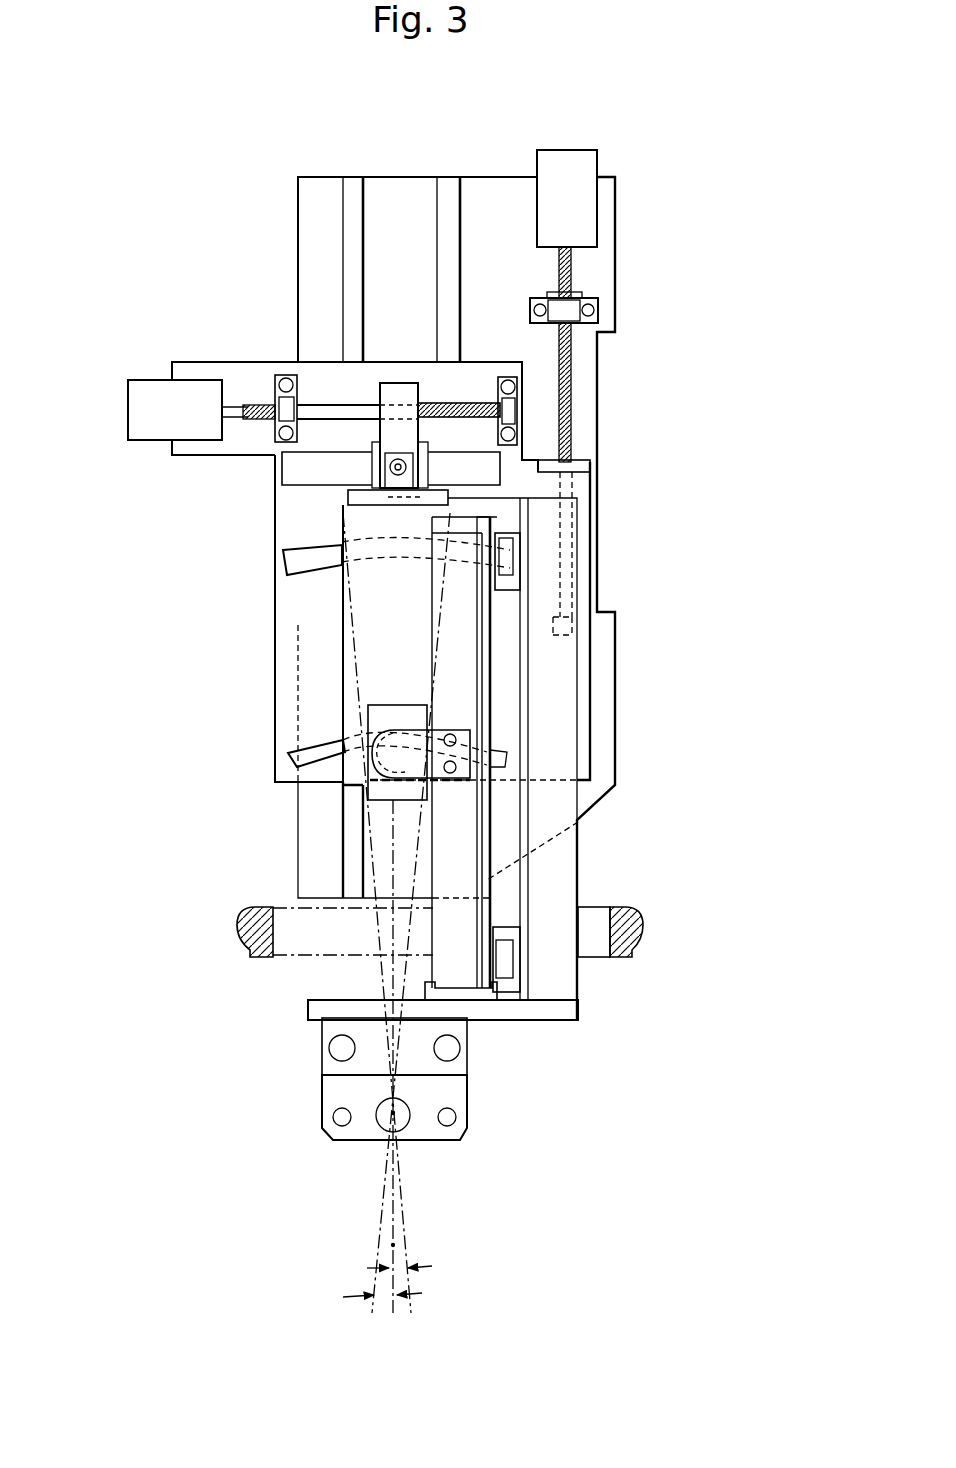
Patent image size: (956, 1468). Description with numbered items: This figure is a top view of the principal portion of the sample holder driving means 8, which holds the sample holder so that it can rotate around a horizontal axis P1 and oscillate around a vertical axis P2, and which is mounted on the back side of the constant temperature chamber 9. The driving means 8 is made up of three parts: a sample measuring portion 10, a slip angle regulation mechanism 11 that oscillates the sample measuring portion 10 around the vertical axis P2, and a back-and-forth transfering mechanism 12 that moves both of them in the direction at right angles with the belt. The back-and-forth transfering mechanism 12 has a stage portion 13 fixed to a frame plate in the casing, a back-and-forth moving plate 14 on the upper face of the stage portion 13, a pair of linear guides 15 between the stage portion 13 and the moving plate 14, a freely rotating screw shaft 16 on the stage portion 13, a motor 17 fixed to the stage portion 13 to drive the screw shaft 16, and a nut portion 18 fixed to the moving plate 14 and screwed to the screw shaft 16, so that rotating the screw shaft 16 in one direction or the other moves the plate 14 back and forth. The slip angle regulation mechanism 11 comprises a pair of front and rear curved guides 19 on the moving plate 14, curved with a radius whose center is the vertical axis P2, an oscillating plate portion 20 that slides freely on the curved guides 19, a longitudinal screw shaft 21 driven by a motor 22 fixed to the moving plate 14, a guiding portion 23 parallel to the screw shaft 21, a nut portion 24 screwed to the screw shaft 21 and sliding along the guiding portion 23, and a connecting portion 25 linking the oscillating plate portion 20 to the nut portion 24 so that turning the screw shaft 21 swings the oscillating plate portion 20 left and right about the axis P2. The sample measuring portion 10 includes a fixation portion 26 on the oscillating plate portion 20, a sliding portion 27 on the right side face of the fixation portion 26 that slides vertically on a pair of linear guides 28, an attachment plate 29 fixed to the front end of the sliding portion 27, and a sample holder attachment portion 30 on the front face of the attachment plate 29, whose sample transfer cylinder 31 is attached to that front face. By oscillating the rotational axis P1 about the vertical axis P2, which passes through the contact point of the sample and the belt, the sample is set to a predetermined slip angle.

The sample holder driving means 8 is at (170, 879).
The constant temperature chamber 9 is at (637, 903).
The sample measuring portion 10 is at (561, 1136).
The slip angle regulation mechanism 11 is at (319, 380).
The back-and-forth transfering mechanism 12 is at (634, 212).
The stage portion 13 is at (494, 180).
The back-and-forth moving plate 14 is at (369, 358).
The linear guides 15 is at (444, 174).
The screw shaft 16 is at (576, 412).
The motor 17 is at (568, 147).
The nut portion 18 is at (584, 488).
The curved guides 19 is at (285, 563).
The oscillating plate portion 20 is at (340, 630).
The screw shaft 21 is at (466, 397).
The motor 22 is at (153, 378).
The guiding portion 23 is at (290, 467).
The nut portion 24 is at (400, 382).
The connecting portion 25 is at (375, 463).
The fixation portion 26 is at (486, 686).
The sliding portion 27 is at (568, 752).
The linear guides 28 is at (525, 555).
The attachment plate 29 is at (548, 1024).
The sample holder attachment portion 30 is at (303, 1068).
The sample transfer cylinder 31 is at (319, 1037).
The horizontal axis P1 is at (393, 1245).
The vertical axis P2 is at (390, 1117).